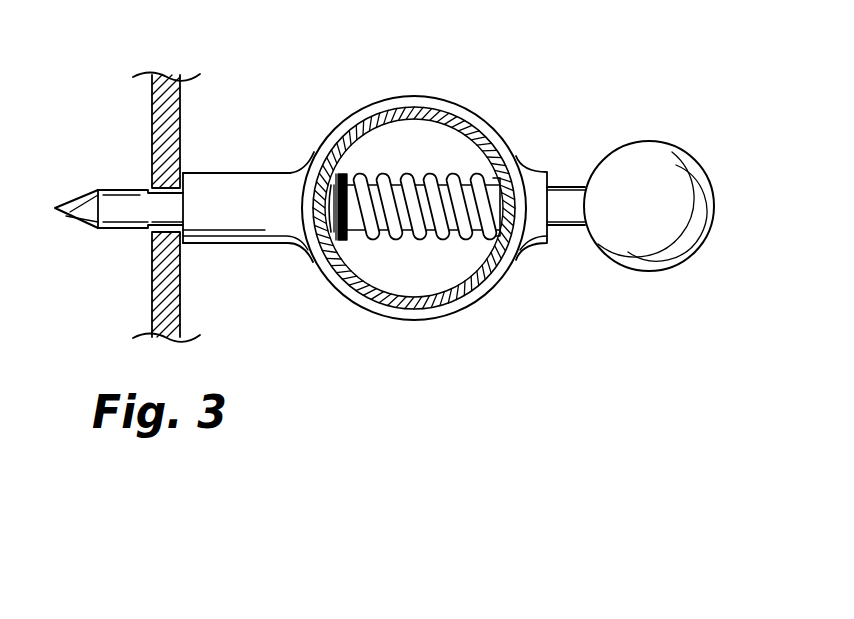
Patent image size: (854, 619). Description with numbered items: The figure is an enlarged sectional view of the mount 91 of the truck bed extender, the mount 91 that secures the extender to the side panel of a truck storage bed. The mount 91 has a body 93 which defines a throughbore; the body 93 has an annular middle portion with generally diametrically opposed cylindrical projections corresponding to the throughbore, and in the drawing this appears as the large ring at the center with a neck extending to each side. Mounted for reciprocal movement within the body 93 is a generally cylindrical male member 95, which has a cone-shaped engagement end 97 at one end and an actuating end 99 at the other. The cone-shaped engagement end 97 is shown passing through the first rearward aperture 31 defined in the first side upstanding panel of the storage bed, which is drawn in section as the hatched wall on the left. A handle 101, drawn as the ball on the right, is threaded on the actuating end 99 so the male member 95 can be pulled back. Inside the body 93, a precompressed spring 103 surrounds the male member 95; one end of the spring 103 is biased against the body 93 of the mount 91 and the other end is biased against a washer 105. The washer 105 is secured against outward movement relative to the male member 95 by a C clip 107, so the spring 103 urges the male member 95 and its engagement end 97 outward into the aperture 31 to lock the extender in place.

The first rearward aperture 31 is at (156, 192).
The cone-shaped engagement end 97 is at (77, 222).
The mount 91 is at (375, 97).
The body 93 is at (446, 98).
The male member 95 is at (566, 183).
The actuating end 99 is at (557, 228).
The handle 101 is at (677, 170).
The spring 103 is at (418, 240).
The washer 105 is at (338, 188).
The C clip 107 is at (323, 210).